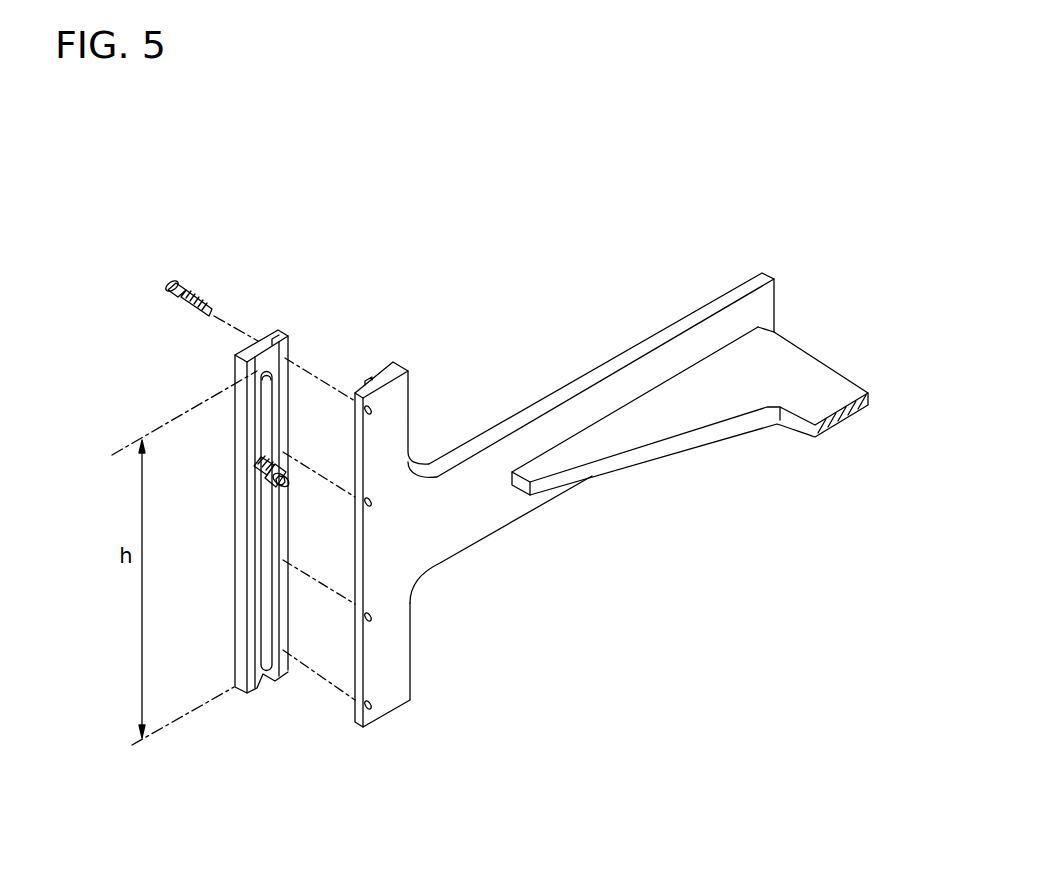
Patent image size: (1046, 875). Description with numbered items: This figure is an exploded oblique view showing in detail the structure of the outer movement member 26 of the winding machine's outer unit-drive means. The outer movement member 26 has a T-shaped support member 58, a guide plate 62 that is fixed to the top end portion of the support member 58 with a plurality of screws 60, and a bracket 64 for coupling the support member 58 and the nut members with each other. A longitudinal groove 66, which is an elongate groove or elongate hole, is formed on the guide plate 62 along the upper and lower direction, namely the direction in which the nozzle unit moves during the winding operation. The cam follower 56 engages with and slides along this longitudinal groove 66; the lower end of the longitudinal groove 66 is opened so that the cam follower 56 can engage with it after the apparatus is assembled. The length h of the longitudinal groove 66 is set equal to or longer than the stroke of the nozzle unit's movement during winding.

The outer movement member 26 is at (518, 323).
The cam follower 56 is at (257, 463).
The support member 58 is at (472, 552).
The screws 60 is at (193, 293).
The guide plate 62 is at (243, 530).
The bracket 64 is at (779, 354).
The longitudinal groove 66 is at (268, 423).